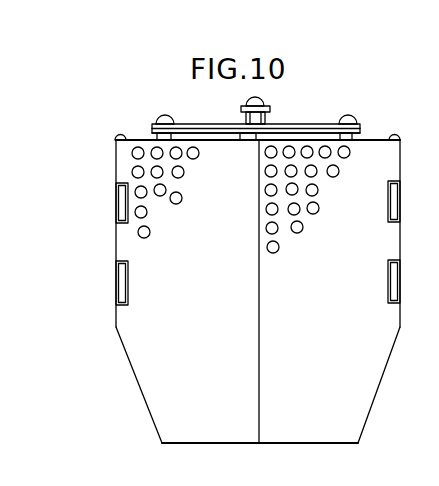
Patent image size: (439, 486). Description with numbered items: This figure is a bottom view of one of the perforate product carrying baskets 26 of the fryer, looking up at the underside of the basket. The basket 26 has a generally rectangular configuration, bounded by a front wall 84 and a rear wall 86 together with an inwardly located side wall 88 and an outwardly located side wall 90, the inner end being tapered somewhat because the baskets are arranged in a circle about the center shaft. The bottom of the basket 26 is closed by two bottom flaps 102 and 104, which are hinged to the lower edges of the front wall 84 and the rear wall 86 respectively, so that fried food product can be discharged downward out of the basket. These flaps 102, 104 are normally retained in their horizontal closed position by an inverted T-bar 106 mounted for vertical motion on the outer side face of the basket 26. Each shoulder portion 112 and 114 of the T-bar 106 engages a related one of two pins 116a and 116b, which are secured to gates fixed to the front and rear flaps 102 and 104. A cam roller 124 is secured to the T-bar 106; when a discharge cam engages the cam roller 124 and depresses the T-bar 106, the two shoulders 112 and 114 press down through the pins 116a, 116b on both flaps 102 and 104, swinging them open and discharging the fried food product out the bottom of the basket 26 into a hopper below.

The basket 26 is at (262, 269).
The front wall 84 is at (134, 372).
The rear wall 86 is at (391, 357).
The inwardly located side wall 88 is at (316, 444).
The outwardly located side wall 90 is at (373, 138).
The front bottom flap 102 is at (196, 316).
The rear bottom flap 104 is at (345, 316).
The inverted T-bar 106 is at (326, 124).
The shoulder portion 112 is at (222, 124).
The shoulder portion 114 is at (307, 125).
The pin 116a is at (167, 117).
The pin 116b is at (353, 119).
The cam roller 124 is at (270, 109).